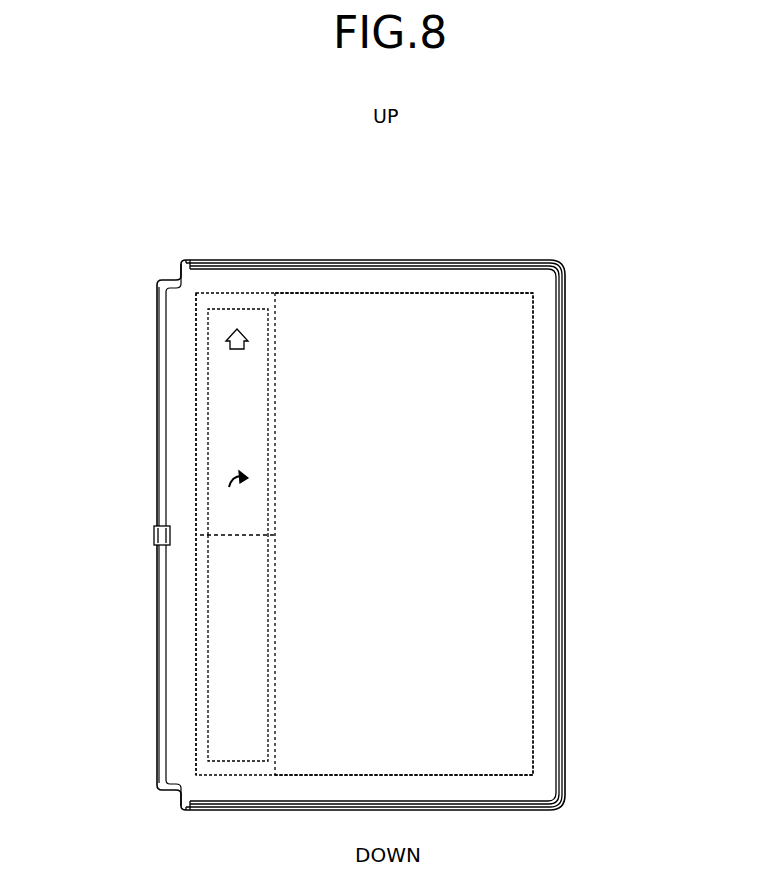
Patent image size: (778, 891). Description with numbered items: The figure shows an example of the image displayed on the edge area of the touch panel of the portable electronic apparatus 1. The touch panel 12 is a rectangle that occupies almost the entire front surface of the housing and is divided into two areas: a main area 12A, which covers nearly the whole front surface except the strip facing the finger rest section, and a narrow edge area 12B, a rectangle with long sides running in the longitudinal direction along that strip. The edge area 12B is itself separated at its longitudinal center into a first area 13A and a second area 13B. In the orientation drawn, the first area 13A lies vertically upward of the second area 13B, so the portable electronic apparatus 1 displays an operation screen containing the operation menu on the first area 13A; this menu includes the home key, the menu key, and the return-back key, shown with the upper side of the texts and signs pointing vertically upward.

The portable electronic apparatus 1 is at (597, 291).
The touch panel 12 is at (335, 200).
The main area 12A is at (307, 310).
The edge area 12B is at (217, 302).
The first area 13A is at (226, 443).
The second area 13B is at (226, 622).